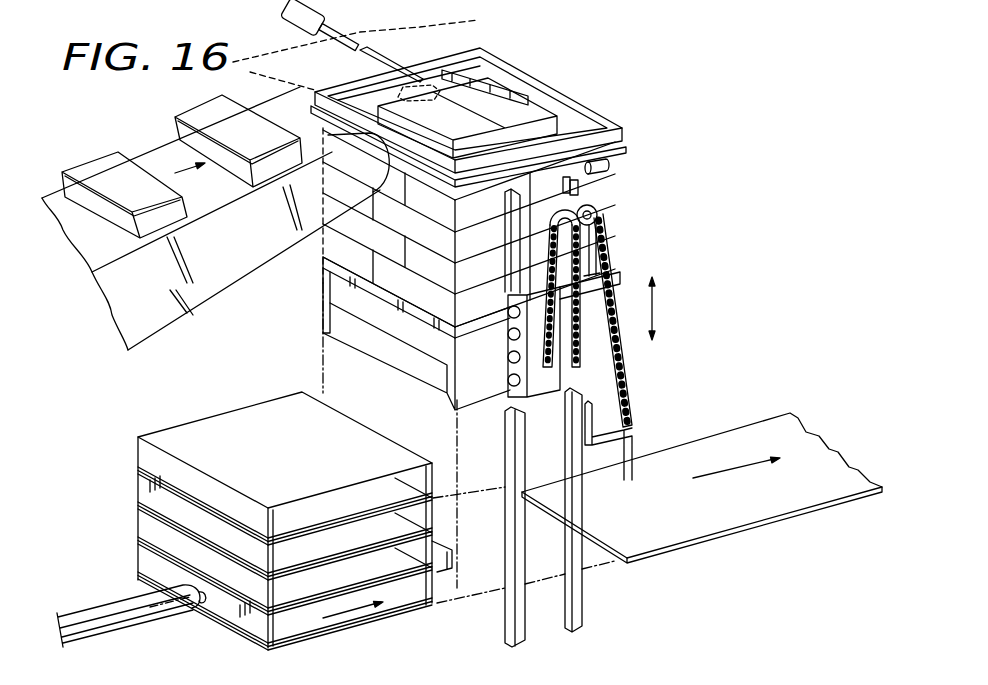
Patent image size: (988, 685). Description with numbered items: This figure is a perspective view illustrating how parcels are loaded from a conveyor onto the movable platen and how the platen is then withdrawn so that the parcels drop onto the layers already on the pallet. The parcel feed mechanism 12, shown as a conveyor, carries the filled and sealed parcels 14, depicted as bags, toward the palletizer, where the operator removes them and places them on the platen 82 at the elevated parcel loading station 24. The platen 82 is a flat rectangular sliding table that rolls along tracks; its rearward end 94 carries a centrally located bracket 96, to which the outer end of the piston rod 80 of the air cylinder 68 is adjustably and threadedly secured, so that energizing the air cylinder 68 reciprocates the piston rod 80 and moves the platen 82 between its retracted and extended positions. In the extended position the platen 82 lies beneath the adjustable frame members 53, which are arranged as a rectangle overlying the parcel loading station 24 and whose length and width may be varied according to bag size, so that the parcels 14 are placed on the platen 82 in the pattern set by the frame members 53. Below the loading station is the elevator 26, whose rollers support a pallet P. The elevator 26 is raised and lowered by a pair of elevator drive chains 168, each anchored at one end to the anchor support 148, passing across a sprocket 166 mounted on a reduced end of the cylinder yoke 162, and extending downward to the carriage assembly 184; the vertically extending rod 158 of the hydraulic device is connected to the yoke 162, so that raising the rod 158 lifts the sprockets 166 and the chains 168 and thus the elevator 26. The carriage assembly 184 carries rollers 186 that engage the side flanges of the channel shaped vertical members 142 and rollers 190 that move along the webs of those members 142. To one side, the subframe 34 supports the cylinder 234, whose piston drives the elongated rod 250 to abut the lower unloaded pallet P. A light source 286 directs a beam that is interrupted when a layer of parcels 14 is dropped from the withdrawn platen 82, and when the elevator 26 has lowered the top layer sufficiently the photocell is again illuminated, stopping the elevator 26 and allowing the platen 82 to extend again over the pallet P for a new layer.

The parcel feed mechanism 12 is at (237, 268).
The parcels 14 is at (98, 163).
The parcel loading station 24 is at (733, 263).
The elevator 26 is at (412, 380).
The subframe 34 is at (380, 632).
The adjustable frame members 53 is at (590, 108).
The air cylinder 68 is at (304, 23).
The piston rod 80 is at (382, 62).
The platen 82 is at (456, 44).
The rearward end 94 is at (258, 81).
The bracket 96 is at (365, 80).
The channel shaped vertical members 142 is at (508, 212).
The anchor support 148 is at (632, 428).
The rod 158 is at (600, 257).
The cylinder yoke 162 is at (603, 212).
The sprockets 166 is at (597, 200).
The elevator drive chains 168 is at (622, 380).
The carriage assembly 184 is at (553, 392).
The rollers 186 is at (512, 382).
The rollers 190 is at (514, 367).
The cylinder 234 is at (94, 625).
The rod 250 is at (206, 606).
The light source 286 is at (618, 158).
The pallet P is at (327, 269).